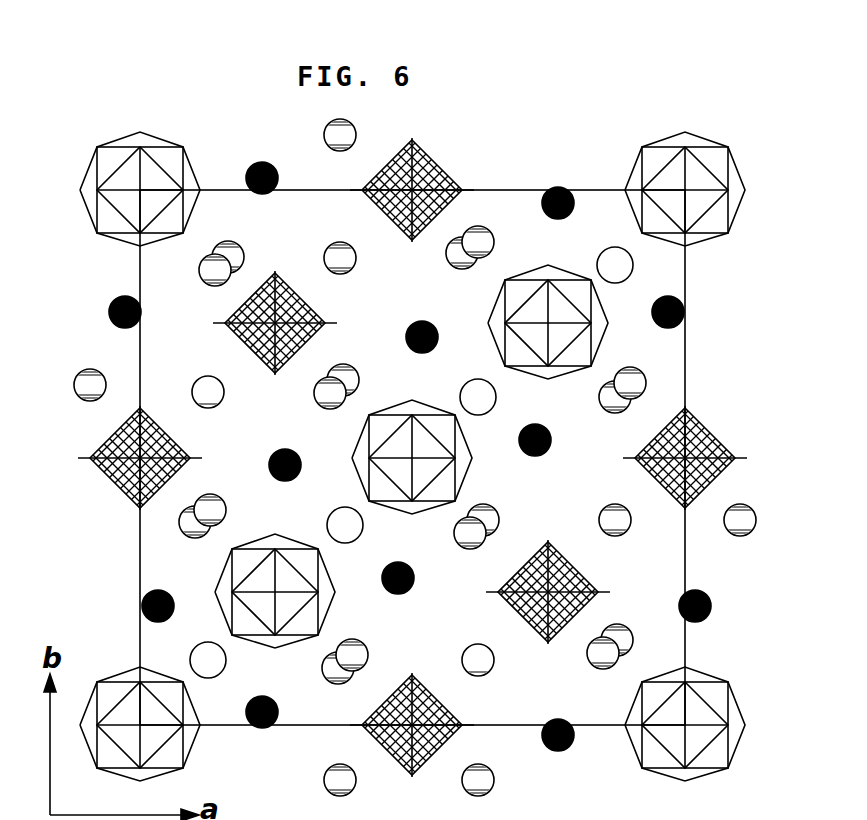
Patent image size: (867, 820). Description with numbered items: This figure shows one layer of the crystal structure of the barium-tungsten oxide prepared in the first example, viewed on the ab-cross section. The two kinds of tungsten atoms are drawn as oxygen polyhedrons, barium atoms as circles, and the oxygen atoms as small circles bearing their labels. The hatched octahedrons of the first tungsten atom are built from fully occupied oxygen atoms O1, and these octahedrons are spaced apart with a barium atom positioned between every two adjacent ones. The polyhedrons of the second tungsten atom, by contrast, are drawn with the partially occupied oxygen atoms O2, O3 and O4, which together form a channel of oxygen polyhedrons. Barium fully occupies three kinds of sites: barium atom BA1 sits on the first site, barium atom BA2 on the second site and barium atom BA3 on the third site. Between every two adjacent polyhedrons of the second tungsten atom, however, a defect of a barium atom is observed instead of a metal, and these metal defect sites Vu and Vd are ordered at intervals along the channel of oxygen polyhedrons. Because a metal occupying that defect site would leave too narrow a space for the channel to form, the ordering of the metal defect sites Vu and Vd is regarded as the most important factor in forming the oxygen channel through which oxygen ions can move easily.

The oxygen atom O1 is at (412, 438).
The oxygen atom O2 is at (412, 456).
The oxygen atom O3 is at (412, 457).
The oxygen atom O4 is at (412, 457).
The barium atom Ba1 BA1 is at (343, 526).
The barium atom Ba2 BA2 is at (415, 457).
The barium atom Ba3 BA3 is at (410, 456).
The metal defect site Vu is at (343, 528).
The metal defect site Vd is at (480, 395).